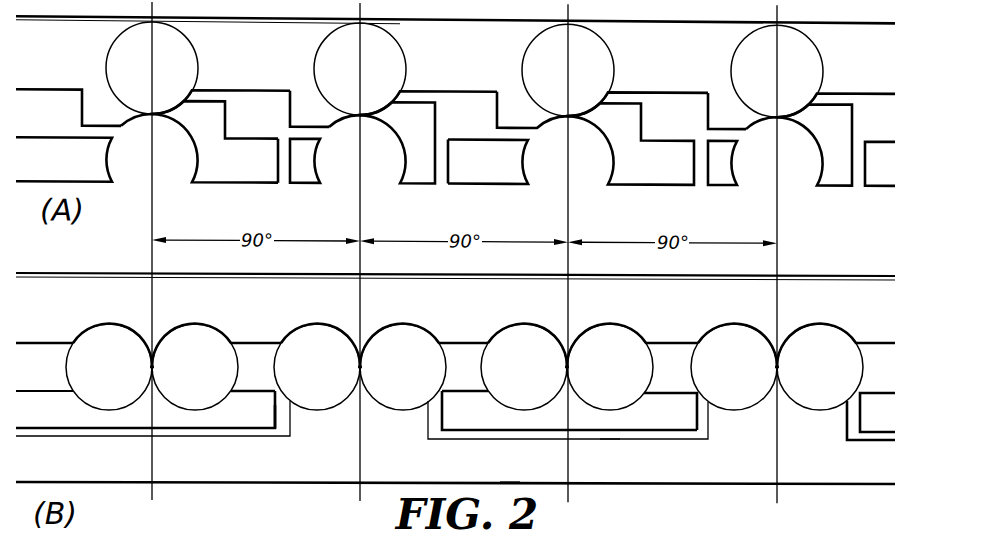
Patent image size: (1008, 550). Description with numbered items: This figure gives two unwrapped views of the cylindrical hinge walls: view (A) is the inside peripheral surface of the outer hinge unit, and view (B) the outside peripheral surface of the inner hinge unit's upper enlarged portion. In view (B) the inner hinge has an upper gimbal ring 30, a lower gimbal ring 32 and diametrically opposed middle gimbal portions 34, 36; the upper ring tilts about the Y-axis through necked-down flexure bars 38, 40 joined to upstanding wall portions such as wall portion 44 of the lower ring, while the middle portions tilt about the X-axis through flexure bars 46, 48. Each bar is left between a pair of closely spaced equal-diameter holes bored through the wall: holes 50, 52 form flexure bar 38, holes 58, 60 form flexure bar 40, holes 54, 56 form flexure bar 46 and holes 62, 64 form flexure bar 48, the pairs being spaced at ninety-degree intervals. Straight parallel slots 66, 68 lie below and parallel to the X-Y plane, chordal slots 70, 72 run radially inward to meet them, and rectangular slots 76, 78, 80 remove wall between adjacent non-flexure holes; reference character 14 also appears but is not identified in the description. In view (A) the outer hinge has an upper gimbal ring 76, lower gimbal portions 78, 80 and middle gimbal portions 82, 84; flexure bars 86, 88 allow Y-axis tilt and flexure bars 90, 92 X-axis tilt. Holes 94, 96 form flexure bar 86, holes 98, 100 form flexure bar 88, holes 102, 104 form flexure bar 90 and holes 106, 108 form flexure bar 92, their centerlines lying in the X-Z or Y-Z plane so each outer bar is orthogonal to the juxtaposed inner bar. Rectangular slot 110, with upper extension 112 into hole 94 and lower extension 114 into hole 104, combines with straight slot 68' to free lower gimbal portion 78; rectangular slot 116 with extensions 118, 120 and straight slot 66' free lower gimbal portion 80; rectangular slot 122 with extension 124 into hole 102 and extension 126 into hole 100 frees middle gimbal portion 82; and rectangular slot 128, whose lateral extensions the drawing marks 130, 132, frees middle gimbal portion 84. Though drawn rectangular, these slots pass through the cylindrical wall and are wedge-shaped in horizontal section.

The rotor 14 is at (265, 390).
The upper gimbal ring 30 is at (238, 303).
The lower gimbal ring 32 is at (497, 474).
The middle gimbal portion 34 is at (450, 419).
The middle gimbal portion 36 is at (232, 418).
The flexure bar 38 is at (360, 367).
The flexure bar 40 is at (777, 367).
The upstanding wall portion 44 is at (793, 448).
The flexure bar 46 is at (152, 367).
The flexure bar 48 is at (568, 367).
The hole 50 is at (330, 327).
The hole 52 is at (412, 326).
The hole 54 is at (532, 326).
The hole 56 is at (629, 327).
The hole 58 is at (752, 328).
The hole 60 is at (848, 328).
The hole 62 is at (118, 326).
The hole 64 is at (214, 326).
The straight parallel slot 66 is at (569, 437).
The straight parallel slot 68 is at (572, 435).
The planar chordal slot 70 is at (198, 434).
The planar chordal slot 72 is at (612, 435).
The upper gimbal ring 76 is at (433, 46).
The lower gimbal portion 78 is at (688, 392).
The lower gimbal portion 80 is at (818, 133).
The middle gimbal portion 82 is at (638, 166).
The middle gimbal portion 84 is at (225, 168).
The flexure bar 86 is at (360, 114).
The flexure bar 88 is at (777, 114).
The flexure bar 90 is at (568, 114).
The flexure bar 92 is at (152, 114).
The hole 94 is at (326, 58).
The hole 96 is at (320, 170).
The hole 98 is at (741, 56).
The hole 100 is at (742, 170).
The hole 102 is at (530, 60).
The hole 104 is at (527, 162).
The hole 106 is at (114, 58).
The hole 108 is at (110, 163).
The rectangular slot 110 is at (442, 124).
The upper extension 112 is at (409, 97).
The lower extension 114 is at (535, 129).
The rectangular slot 116 is at (59, 103).
The lateral extension 118 is at (848, 95).
The lateral extension 120 is at (124, 122).
The rectangular slot 122 is at (655, 122).
The upper lateral extension 124 is at (638, 92).
The lower extension 126 is at (745, 127).
The rectangular slot 128 is at (236, 124).
The shoulder 130 is at (204, 97).
The step 132 is at (327, 127).
The straight slot 66' is at (559, 180).
The straight slot 68' is at (555, 179).